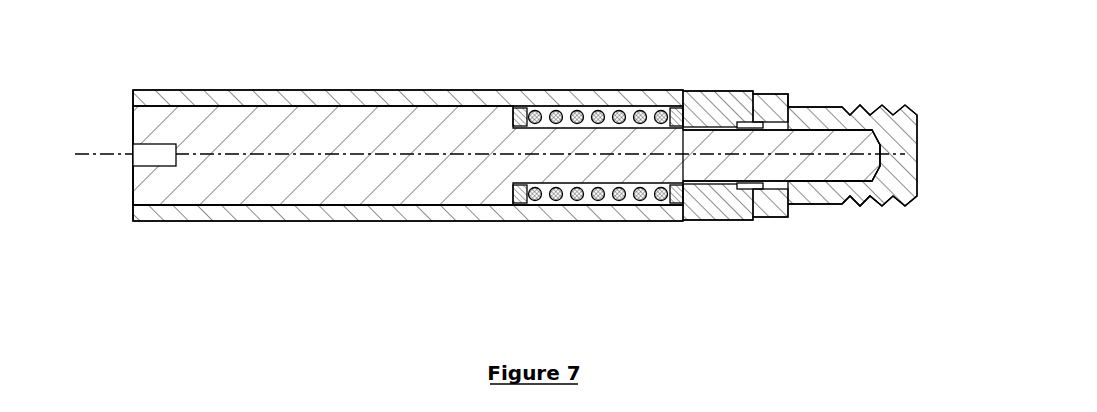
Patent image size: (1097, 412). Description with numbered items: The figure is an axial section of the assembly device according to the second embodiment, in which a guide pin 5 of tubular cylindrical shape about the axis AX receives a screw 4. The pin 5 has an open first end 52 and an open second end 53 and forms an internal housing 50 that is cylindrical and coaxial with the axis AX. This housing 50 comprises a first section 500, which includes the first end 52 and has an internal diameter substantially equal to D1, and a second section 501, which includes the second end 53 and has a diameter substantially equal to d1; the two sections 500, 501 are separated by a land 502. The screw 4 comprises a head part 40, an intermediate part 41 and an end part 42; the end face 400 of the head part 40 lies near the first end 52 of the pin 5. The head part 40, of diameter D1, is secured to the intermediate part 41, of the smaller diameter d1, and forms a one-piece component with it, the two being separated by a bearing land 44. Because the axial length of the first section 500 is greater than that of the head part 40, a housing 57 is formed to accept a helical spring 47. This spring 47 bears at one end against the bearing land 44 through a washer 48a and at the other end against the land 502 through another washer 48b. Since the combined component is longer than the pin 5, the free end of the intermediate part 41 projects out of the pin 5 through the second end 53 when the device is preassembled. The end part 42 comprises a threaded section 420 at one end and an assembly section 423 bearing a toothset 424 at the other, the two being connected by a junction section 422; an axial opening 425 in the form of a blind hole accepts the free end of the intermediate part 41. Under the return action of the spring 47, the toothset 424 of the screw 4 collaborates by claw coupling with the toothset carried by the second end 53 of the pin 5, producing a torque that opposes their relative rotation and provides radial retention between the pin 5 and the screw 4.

The screw 4 is at (385, 192).
The guide pin 5 is at (355, 92).
The head part 40 is at (338, 177).
The intermediate part 41 is at (723, 175).
The end part 42 is at (868, 75).
The bearing land 44 is at (522, 107).
The helical spring 47 is at (600, 111).
The washer 48a is at (517, 188).
The washer 48b is at (677, 196).
The internal housing 50 is at (167, 202).
The first end 52 is at (108, 118).
The second end 53 is at (756, 74).
The housing 57 is at (660, 107).
The end face 400 is at (135, 177).
The threaded section 420 is at (905, 195).
The junction section 422 is at (824, 129).
The assembly section 423 is at (783, 95).
The toothset 424 is at (764, 207).
The axial opening 425 is at (846, 181).
The first section 500 is at (258, 202).
The second section 501 is at (705, 137).
The land 502 is at (679, 109).
The internal diameter D1 is at (431, 96).
The diameter of intermediate part d1 is at (803, 245).
The axis AX is at (431, 214).